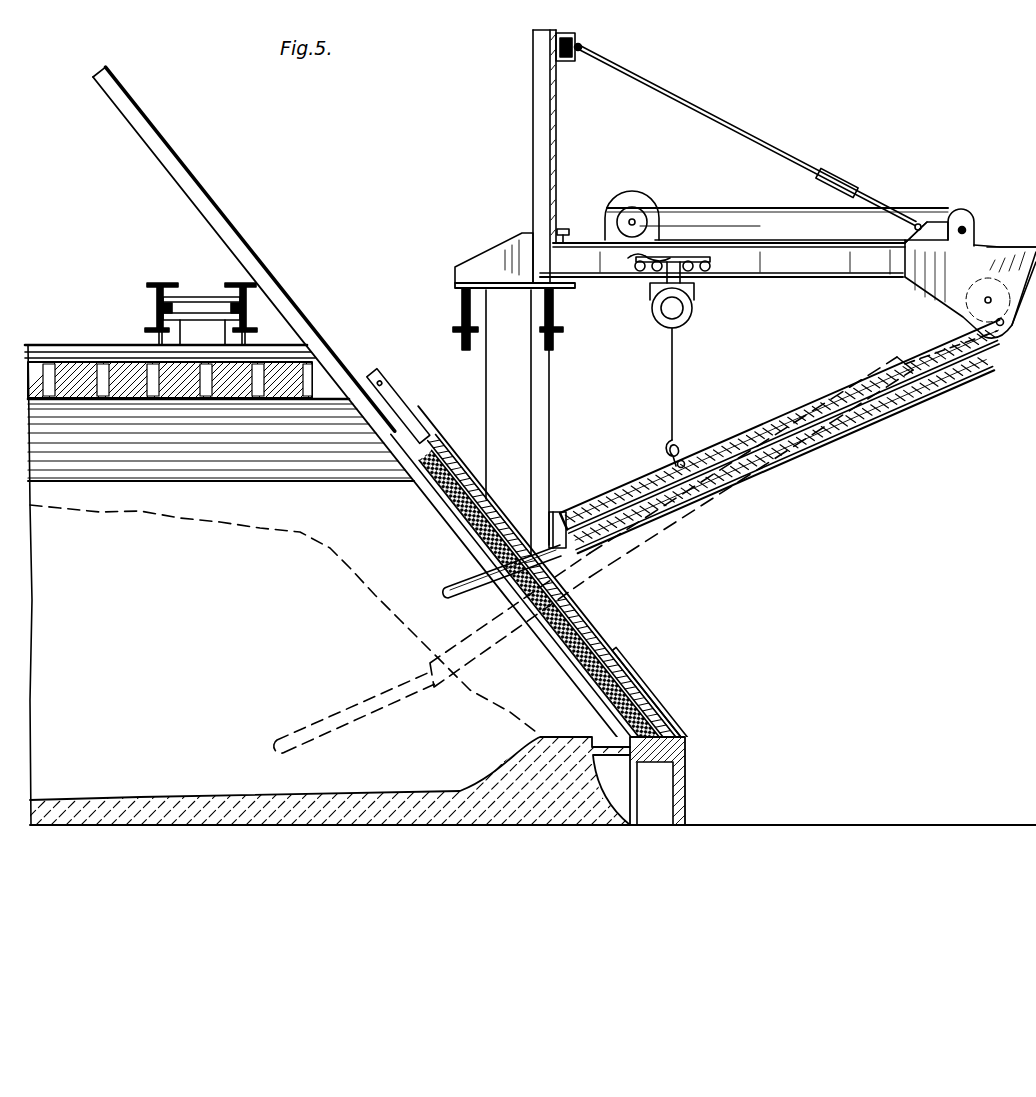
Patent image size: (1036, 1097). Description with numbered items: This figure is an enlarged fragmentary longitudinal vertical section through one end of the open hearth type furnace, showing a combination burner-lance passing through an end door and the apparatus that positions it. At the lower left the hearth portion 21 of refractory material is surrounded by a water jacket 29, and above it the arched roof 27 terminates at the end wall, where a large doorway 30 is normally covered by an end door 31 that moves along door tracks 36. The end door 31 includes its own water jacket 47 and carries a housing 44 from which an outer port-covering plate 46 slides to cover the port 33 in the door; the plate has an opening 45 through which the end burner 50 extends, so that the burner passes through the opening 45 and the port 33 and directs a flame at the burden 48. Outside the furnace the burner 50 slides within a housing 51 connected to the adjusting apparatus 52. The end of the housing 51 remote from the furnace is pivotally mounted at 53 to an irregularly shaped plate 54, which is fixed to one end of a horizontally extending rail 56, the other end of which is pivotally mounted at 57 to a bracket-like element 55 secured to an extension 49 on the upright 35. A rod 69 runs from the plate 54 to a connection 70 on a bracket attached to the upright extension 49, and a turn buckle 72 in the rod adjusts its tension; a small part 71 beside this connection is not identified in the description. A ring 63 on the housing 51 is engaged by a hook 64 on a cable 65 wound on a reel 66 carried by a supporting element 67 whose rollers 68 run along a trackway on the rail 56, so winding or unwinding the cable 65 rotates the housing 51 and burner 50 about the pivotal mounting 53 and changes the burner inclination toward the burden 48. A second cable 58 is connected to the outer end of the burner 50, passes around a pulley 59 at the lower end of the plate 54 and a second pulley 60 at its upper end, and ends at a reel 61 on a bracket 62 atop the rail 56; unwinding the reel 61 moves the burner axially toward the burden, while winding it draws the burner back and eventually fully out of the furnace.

The hearth portion 21 is at (127, 798).
The arched roof 27 is at (123, 378).
The water jacket 29 is at (668, 780).
The doorway 30 is at (442, 500).
The end door 31 is at (445, 437).
The port 33 is at (502, 583).
The upright 35 is at (194, 282).
The door tracks 36 is at (163, 155).
The housing 44 is at (598, 623).
The opening 45 is at (553, 530).
The outer port-covering plate 46 is at (492, 492).
The water jacket 47 is at (391, 381).
The burden 48 is at (306, 527).
The upright extension 49 is at (533, 150).
The end burner 50 is at (478, 578).
The housing 51 is at (750, 424).
The adjusting apparatus 52 is at (890, 197).
The pivotal mounting 53 is at (1003, 330).
The irregularly shaped plate 54 is at (993, 266).
The bracket-like element 55 is at (510, 253).
The horizontally extending rail 56 is at (815, 268).
The pivotal mounting 57 is at (566, 228).
The cable 58 is at (740, 209).
The pulley 59 is at (952, 298).
The second pulley 60 is at (962, 214).
The reel 61 is at (660, 226).
The bracket 62 is at (637, 203).
The ring 63 is at (676, 466).
The hook 64 is at (668, 440).
The cable 65 is at (671, 378).
The reel 66 is at (656, 327).
The supporting element 67 is at (662, 288).
The rollers 68 is at (628, 261).
The rod 69 is at (752, 136).
The connection 70 is at (583, 46).
The anchor pin 71 is at (559, 62).
The turn buckle 72 is at (835, 174).